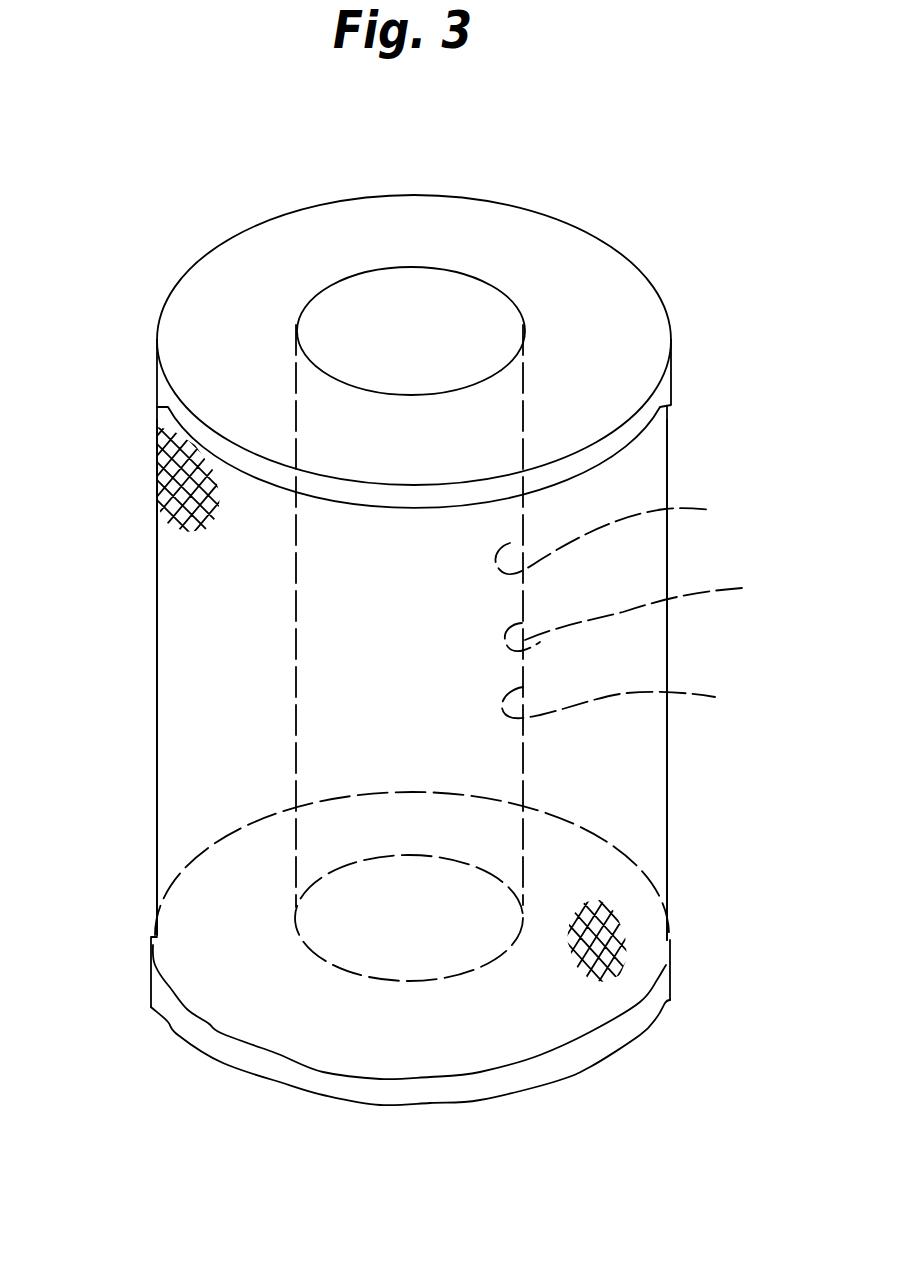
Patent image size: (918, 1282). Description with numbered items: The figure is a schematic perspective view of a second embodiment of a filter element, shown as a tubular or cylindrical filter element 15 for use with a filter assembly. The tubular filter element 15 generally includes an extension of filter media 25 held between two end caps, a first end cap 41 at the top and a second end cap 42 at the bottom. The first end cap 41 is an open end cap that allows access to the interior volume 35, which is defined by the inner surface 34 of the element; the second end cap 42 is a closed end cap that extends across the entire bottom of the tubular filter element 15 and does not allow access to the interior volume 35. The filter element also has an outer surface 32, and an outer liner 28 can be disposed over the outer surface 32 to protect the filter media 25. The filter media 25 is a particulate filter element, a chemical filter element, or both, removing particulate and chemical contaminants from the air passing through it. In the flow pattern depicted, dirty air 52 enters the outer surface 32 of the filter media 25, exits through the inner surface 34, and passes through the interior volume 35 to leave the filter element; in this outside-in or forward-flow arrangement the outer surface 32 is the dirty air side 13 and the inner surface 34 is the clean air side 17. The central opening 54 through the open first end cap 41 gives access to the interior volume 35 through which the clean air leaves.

The tubular filter element 15 is at (655, 233).
The first end cap 41 is at (208, 253).
The second end cap 42 is at (178, 1035).
The central passage 54 is at (455, 333).
The outer liner 28 is at (157, 462).
The dirty air 52 is at (236, 549).
The interior volume 35 is at (620, 537).
The inner surface 34 is at (640, 618).
The clean air side 17 is at (629, 700).
The filter media 25 is at (667, 783).
The outer surface 32 is at (157, 695).
The dirty air side 13 is at (157, 790).